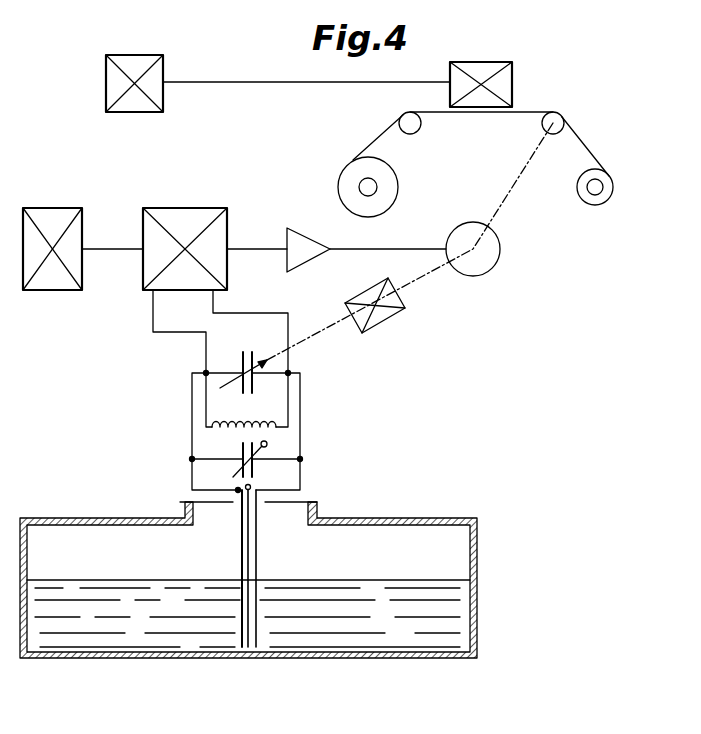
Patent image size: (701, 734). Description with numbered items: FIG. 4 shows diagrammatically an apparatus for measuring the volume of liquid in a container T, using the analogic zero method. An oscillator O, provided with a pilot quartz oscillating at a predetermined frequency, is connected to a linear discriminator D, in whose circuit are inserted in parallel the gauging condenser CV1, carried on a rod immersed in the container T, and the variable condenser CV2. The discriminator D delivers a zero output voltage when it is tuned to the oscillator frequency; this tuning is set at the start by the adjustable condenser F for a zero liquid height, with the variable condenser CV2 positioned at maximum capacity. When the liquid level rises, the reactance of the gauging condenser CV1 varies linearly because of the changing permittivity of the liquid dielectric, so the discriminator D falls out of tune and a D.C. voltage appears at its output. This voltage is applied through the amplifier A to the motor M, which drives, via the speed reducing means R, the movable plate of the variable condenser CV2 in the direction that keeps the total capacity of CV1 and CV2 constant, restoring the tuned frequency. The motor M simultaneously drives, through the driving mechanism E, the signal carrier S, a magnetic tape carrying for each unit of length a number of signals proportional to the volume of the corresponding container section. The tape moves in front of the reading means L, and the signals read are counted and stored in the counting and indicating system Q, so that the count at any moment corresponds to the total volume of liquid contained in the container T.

The counting and indicating system Q is at (165, 64).
The reading means L is at (515, 77).
The driving mechanism E is at (564, 114).
The signal carrier S is at (596, 147).
The oscillator O is at (60, 216).
The linear discriminator D is at (195, 216).
The amplifier A is at (316, 233).
The motor M is at (500, 254).
The speed reducing means R is at (392, 319).
The variable condenser CV2 is at (243, 366).
The adjustable condenser F is at (240, 463).
The gauging condenser CV1 is at (258, 569).
The container T is at (392, 516).